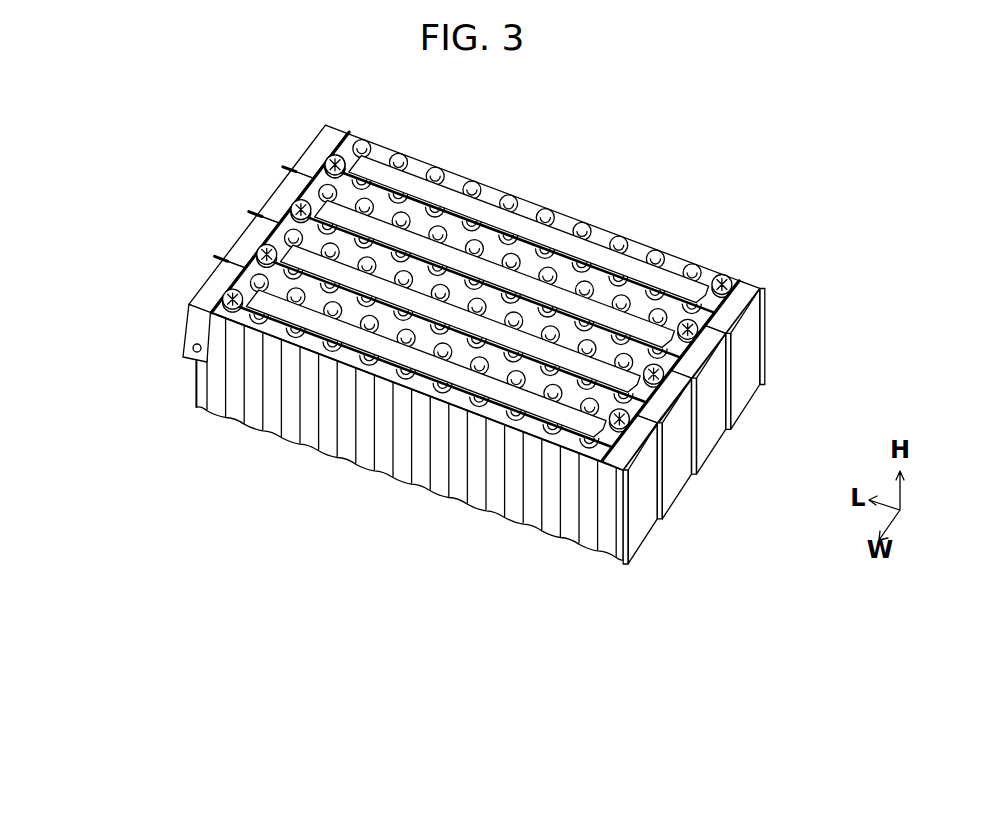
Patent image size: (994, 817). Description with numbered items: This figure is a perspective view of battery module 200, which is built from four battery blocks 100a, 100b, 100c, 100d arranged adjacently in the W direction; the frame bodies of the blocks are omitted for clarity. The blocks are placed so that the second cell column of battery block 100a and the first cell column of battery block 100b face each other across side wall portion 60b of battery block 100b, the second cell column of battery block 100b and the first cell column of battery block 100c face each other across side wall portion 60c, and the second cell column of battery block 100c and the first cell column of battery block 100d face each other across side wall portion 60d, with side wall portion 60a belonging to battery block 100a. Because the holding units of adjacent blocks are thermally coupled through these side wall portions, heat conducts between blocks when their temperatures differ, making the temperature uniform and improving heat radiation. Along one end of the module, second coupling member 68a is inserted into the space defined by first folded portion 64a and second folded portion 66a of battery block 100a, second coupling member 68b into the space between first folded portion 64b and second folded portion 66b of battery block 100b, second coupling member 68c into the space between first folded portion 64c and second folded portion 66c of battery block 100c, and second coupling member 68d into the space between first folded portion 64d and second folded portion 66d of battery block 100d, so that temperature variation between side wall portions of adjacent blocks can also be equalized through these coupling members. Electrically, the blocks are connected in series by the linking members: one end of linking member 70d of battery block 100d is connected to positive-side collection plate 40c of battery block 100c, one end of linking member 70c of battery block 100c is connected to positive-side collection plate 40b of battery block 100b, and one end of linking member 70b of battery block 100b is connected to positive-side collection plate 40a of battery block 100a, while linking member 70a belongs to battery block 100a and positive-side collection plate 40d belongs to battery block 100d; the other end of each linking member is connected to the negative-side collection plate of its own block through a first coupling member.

The battery module 200 is at (851, 667).
The battery block 100a is at (192, 287).
The battery block 100b is at (222, 243).
The battery block 100c is at (260, 202).
The battery block 100d is at (292, 158).
The positive-side collection plate 40a is at (515, 393).
The positive-side collection plate 40b is at (507, 347).
The positive-side collection plate 40c is at (583, 314).
The positive-side collection plate 40d is at (567, 250).
The side wall portion 60a is at (347, 393).
The side wall portion 60b is at (350, 325).
The side wall portion 60c is at (470, 220).
The side wall portion 60d is at (418, 184).
The first folded portion 64a is at (624, 457).
The first folded portion 64b is at (664, 478).
The first folded portion 64c is at (688, 352).
The first folded portion 64d is at (740, 262).
The second folded portion 66a is at (660, 475).
The second folded portion 66b is at (694, 430).
The second folded portion 66c is at (728, 393).
The second folded portion 66d is at (763, 347).
The second coupling member 68a is at (223, 260).
The second coupling member 68b is at (257, 216).
The second coupling member 68c is at (291, 171).
The second coupling member 68d is at (326, 128).
The linking member 70a is at (183, 350).
The linking member 70b is at (612, 430).
The linking member 70c is at (343, 158).
The linking member 70d is at (712, 303).